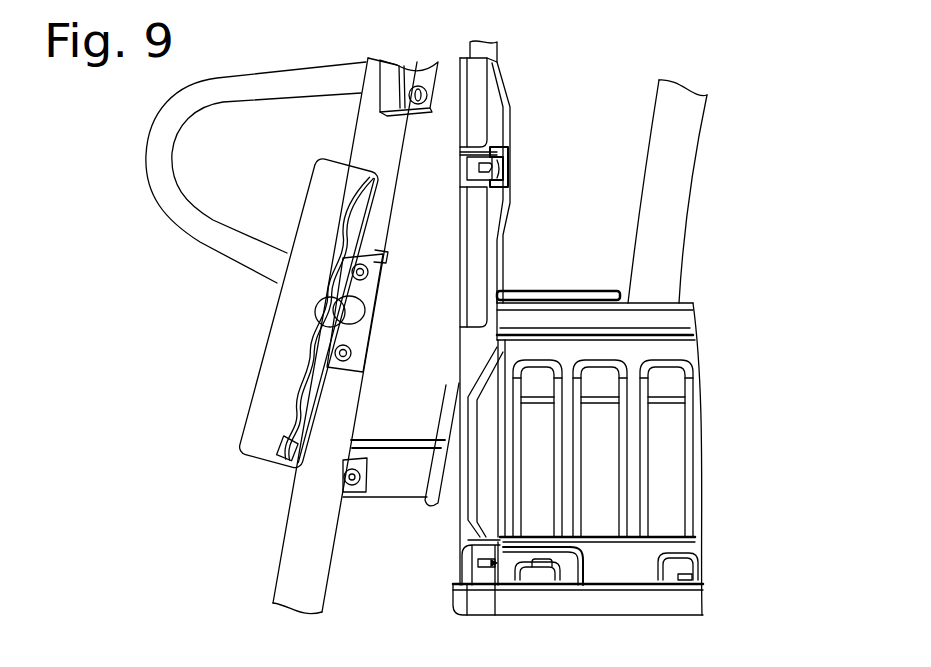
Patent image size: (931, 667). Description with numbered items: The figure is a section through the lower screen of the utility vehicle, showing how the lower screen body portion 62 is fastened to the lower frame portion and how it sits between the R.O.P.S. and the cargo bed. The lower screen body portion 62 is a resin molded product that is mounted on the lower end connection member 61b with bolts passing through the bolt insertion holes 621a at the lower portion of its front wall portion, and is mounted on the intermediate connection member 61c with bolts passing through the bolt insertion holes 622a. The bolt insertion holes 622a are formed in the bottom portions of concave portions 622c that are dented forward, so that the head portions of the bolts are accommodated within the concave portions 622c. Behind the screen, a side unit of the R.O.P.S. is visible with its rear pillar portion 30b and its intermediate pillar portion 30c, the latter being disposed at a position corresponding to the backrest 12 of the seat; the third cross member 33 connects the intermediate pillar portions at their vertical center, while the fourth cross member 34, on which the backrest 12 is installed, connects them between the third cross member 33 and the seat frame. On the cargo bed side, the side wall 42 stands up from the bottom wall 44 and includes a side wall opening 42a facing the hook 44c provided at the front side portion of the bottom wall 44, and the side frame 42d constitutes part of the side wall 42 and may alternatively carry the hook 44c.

The backrest 12 is at (285, 300).
The rear pillar portion 30b is at (682, 180).
The intermediate pillar portion 30c is at (303, 507).
The third cross member 33 is at (407, 92).
The fourth cross member 34 is at (350, 320).
The side wall 42 is at (663, 433).
The side wall opening 42a is at (568, 565).
The side frame 42d is at (653, 597).
The bottom wall 44 is at (697, 577).
The hook 44c is at (543, 583).
The lower end connection member 61b is at (477, 562).
The intermediate connection member 61c is at (472, 162).
The lower screen body portion 62 is at (490, 112).
The bolt insertion hole 621a is at (488, 570).
The bolt insertion hole 622a is at (490, 167).
The concave portion 622c is at (508, 162).